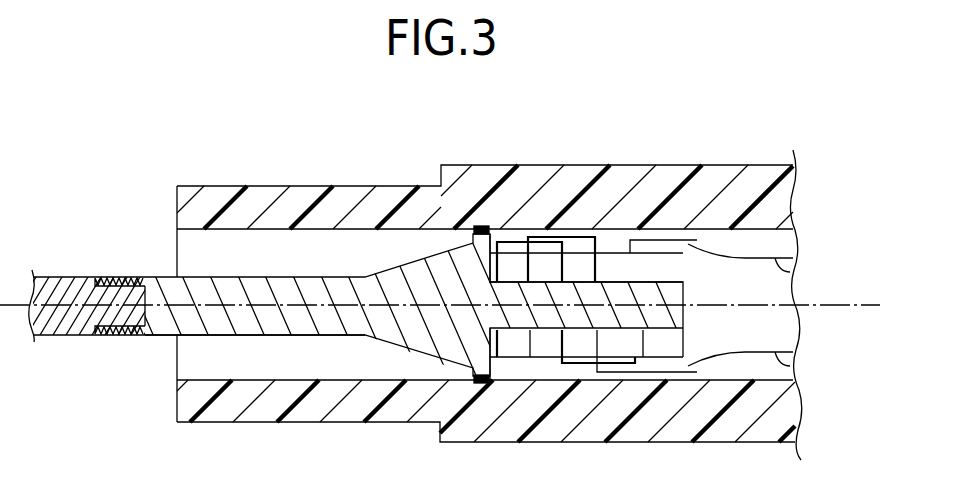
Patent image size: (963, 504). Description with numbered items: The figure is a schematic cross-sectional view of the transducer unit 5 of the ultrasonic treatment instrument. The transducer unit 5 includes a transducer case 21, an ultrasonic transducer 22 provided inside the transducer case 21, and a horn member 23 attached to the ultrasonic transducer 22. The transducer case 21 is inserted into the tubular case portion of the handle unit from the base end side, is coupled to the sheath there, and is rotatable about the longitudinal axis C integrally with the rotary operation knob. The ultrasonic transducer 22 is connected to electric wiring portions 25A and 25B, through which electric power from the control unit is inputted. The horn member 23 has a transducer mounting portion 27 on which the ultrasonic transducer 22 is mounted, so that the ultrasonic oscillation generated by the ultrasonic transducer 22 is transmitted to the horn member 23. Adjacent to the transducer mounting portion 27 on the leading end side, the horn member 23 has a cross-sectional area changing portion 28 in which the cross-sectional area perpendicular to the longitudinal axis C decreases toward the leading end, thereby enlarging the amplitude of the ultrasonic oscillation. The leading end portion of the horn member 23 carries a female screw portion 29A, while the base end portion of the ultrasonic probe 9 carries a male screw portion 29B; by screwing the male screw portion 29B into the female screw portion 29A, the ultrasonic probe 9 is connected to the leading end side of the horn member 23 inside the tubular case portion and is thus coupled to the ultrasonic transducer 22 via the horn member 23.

The transducer unit 5 is at (710, 165).
The ultrasonic probe 9 is at (48, 337).
The transducer case 21 is at (623, 187).
The ultrasonic transducer 22 is at (630, 265).
The horn member 23 is at (348, 316).
The electric wiring portion 25A is at (790, 272).
The electric wiring portion 25B is at (790, 366).
The transducer mounting portion 27 is at (570, 320).
The cross-sectional area changing portion 28 is at (411, 340).
The female screw portion 29A is at (112, 331).
The male screw portion 29B is at (97, 280).
The longitudinal axis C is at (882, 300).